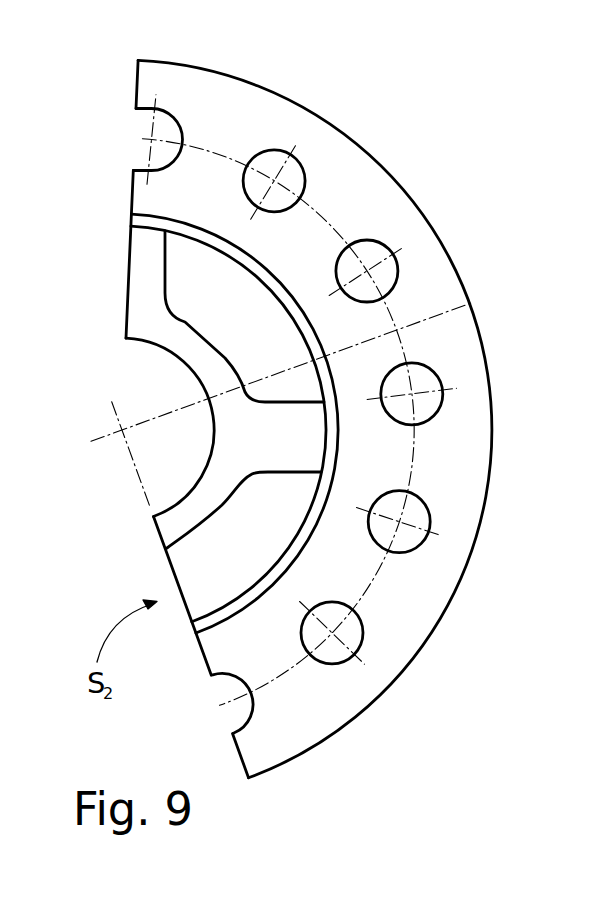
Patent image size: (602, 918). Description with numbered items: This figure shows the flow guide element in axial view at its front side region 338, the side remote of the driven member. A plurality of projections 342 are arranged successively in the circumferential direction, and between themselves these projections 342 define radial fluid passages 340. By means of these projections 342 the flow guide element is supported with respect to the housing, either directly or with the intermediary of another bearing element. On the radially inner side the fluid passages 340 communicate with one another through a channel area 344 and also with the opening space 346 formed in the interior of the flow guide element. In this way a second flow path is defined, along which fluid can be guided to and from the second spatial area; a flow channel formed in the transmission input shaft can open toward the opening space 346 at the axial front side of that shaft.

The front side region 338 is at (101, 298).
The radial fluid passages 340 is at (305, 445).
The projections 342 is at (250, 317).
The channel area 344 is at (185, 342).
The opening space 346 is at (160, 463).